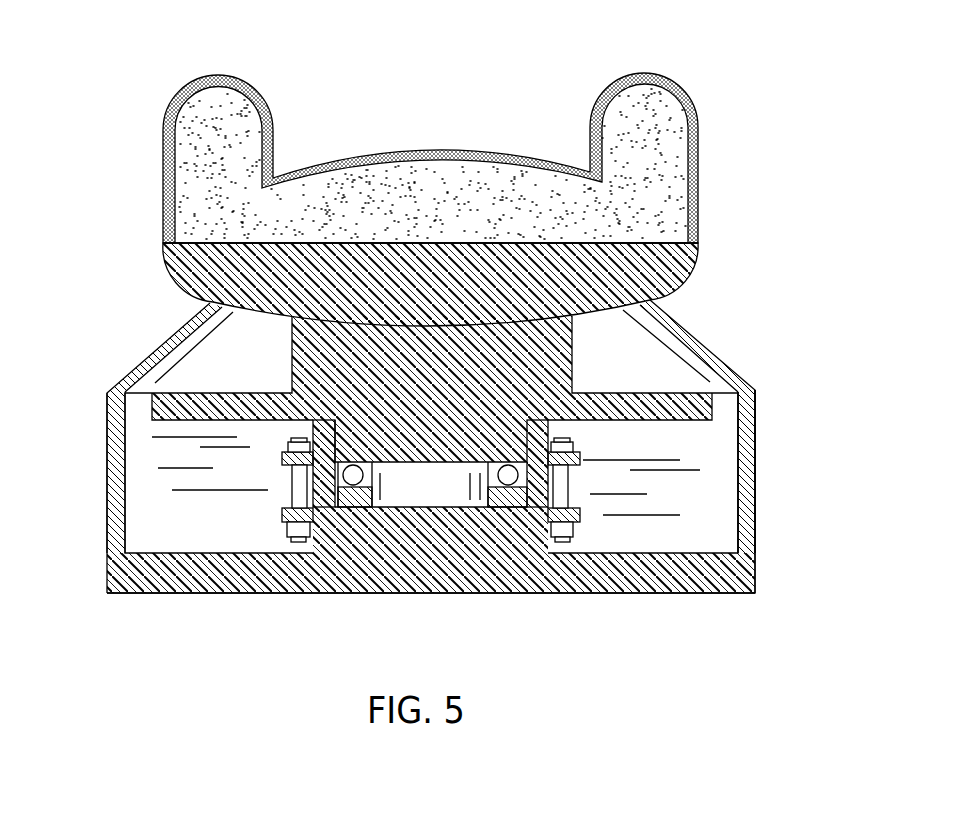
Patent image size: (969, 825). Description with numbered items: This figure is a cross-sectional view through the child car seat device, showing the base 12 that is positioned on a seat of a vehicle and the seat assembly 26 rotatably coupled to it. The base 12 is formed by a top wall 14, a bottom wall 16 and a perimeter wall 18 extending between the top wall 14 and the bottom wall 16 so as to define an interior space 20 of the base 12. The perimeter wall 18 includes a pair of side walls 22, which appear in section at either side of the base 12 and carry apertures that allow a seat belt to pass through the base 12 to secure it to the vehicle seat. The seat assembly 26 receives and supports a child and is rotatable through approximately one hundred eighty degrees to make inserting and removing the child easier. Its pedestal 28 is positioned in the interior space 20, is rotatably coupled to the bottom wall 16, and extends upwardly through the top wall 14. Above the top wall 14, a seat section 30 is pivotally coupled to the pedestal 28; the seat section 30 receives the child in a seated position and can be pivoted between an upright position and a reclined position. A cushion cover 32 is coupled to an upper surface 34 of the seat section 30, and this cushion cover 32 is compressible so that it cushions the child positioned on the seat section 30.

The base 12 is at (755, 593).
The top wall 14 is at (711, 352).
The bottom wall 16 is at (647, 583).
The perimeter wall 18 is at (748, 502).
The interior space 20 is at (177, 533).
The side walls 22 is at (107, 461).
The seat assembly 26 is at (661, 73).
The pedestal 28 is at (300, 347).
The seat section 30 is at (663, 263).
The cushion cover 32 is at (450, 187).
The upper surface 34 is at (203, 262).